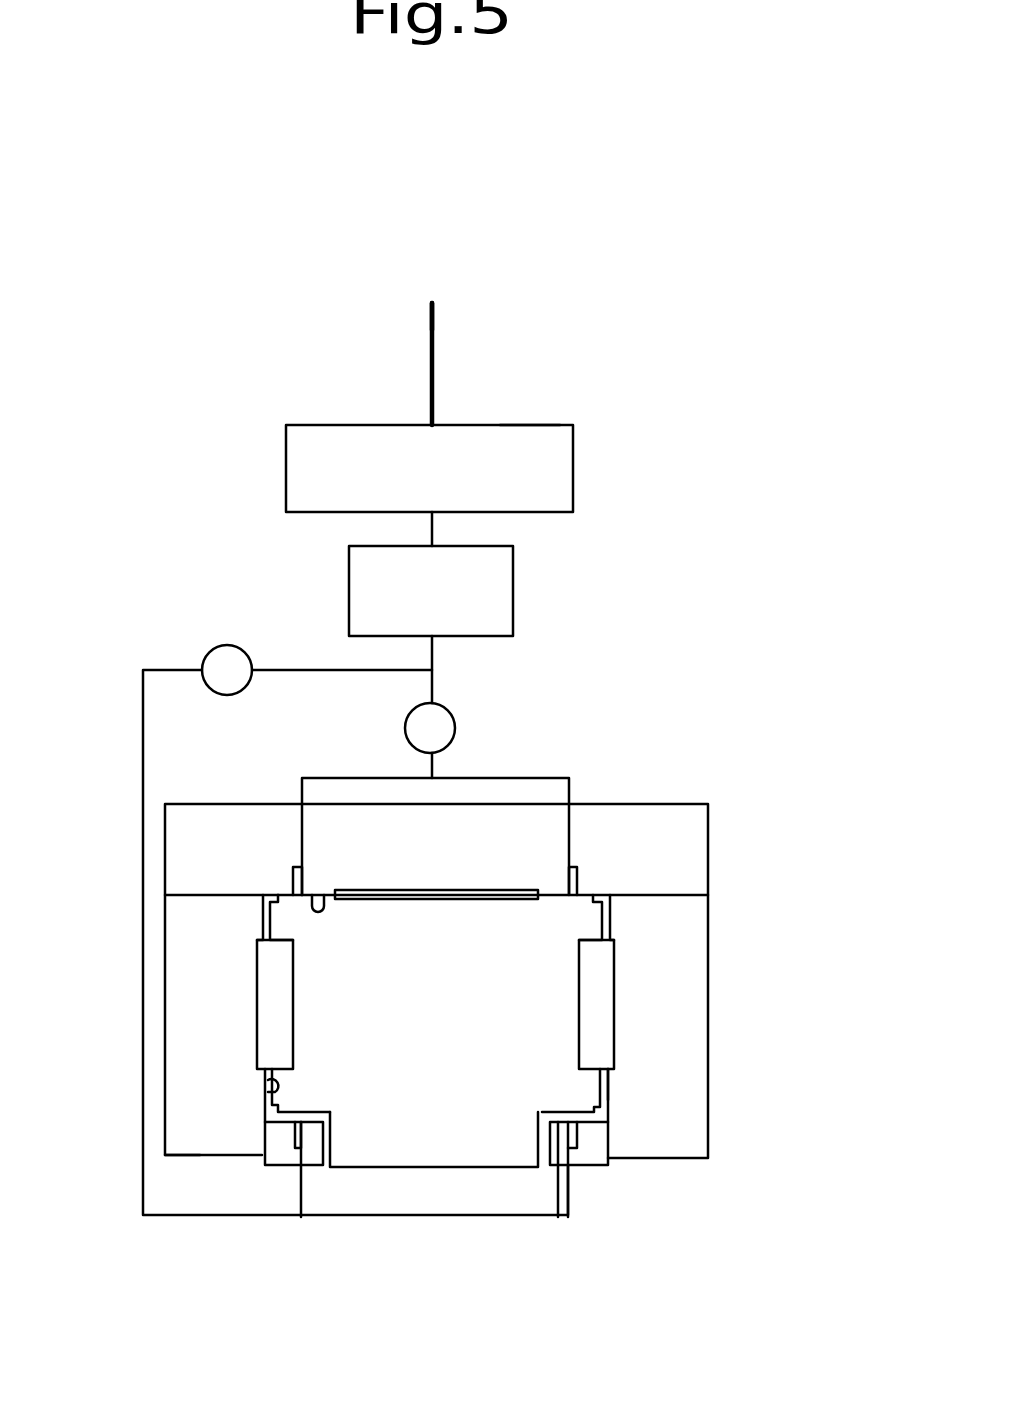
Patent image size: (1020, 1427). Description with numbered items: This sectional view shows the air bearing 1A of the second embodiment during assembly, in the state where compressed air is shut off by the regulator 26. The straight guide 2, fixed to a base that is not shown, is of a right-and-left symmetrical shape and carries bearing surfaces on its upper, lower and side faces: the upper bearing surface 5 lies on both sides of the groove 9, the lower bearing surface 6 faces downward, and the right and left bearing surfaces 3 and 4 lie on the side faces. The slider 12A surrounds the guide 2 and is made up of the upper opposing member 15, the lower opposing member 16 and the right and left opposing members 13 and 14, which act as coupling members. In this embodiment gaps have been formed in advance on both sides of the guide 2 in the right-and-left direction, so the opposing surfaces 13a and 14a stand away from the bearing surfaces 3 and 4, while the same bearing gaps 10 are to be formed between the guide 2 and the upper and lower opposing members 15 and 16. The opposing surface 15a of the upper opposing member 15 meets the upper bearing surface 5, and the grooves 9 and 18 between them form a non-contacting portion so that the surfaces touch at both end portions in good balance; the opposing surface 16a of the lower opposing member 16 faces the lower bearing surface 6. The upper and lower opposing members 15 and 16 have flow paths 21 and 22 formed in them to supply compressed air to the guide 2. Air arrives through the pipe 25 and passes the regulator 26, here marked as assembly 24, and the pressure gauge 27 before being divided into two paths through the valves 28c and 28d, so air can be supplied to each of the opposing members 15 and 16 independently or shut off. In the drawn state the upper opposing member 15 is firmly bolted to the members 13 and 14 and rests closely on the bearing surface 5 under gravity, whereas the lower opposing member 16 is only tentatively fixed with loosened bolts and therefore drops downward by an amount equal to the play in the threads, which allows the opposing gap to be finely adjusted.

The air bearing 1A is at (393, 292).
The guide 2 is at (445, 1168).
The bearing surface 3 is at (263, 908).
The bearing surface 4 is at (602, 920).
The upper bearing surface 5 is at (285, 893).
The lower bearing surface 6 is at (562, 1128).
The groove 9 is at (540, 893).
The bearing gap 10 is at (265, 955).
The slider 12A is at (193, 1157).
The opposing member 13 is at (185, 1108).
The opposing surface 13a is at (270, 1085).
The opposing member 14 is at (688, 1100).
The opposing surface 14a is at (598, 1048).
The upper opposing member 15 is at (683, 842).
The opposing surface 15a is at (322, 893).
The lower opposing member 16 is at (597, 1150).
The opposing surface 16a is at (312, 1112).
The groove 18 is at (452, 893).
The flow path 21 is at (297, 870).
The flow path 22 is at (296, 1140).
The regulator 24 is at (575, 461).
The pipe 25 is at (434, 340).
The regulator 26 is at (530, 425).
The pressure gauge 27 is at (513, 596).
The valve 28c is at (455, 720).
The valve 28d is at (232, 645).